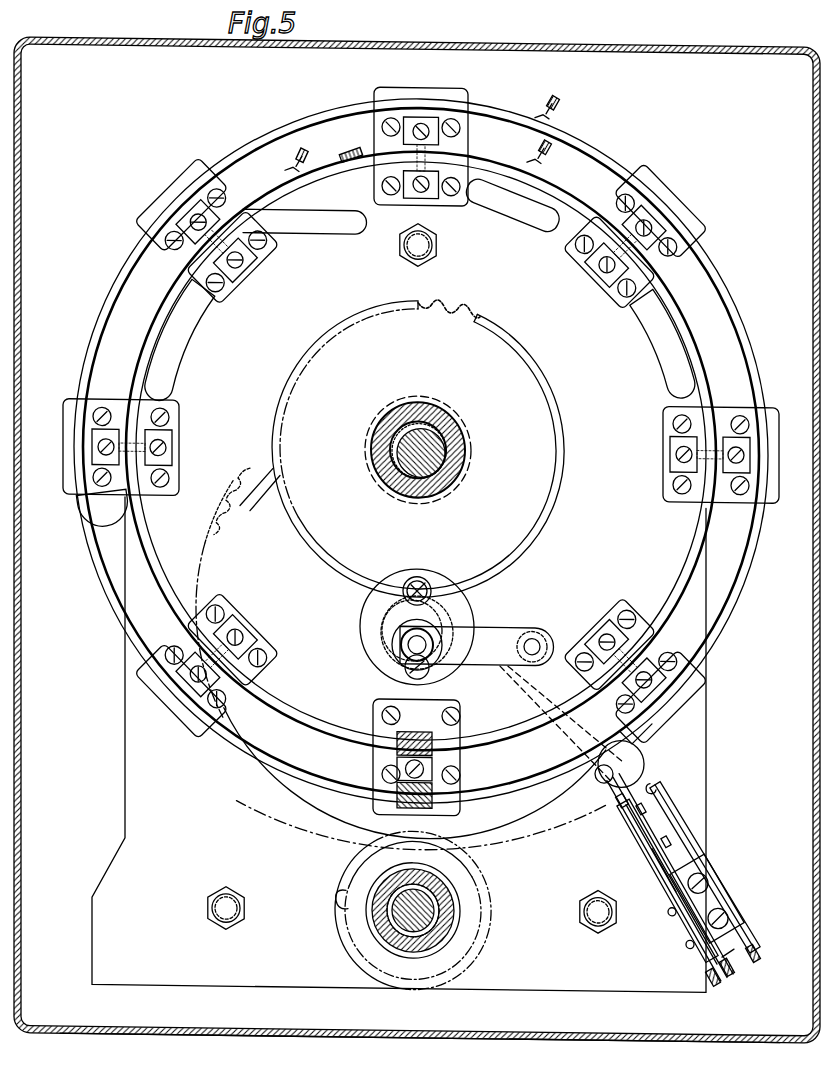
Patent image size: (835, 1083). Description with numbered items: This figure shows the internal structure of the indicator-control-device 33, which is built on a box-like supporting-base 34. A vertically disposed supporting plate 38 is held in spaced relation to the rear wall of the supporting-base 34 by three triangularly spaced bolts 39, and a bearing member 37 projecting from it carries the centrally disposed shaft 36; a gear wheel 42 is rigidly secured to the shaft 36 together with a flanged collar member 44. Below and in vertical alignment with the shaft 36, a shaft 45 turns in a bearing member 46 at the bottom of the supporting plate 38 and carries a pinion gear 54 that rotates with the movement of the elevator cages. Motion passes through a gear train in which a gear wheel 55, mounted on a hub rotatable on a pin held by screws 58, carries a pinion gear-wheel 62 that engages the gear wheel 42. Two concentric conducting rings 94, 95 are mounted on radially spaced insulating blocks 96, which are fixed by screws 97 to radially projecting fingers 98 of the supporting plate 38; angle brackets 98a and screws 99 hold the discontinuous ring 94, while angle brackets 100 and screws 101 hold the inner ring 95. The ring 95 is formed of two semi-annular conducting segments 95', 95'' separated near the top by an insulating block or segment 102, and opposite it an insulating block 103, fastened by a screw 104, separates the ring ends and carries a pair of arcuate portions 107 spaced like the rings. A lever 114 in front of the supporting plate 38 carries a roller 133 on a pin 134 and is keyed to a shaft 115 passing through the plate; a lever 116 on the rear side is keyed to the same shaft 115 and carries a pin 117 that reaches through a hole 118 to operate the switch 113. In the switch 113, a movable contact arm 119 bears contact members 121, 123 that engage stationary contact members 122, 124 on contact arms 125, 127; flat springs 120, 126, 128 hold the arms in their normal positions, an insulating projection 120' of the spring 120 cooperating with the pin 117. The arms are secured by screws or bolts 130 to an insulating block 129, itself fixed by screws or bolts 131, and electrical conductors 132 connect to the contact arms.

The indicator-control-device 33 is at (658, 42).
The supporting-base 34 is at (118, 1035).
The ring 94 is at (290, 115).
The ring 95 is at (421, 451).
The semi-annular conducting segment 95' is at (560, 143).
The semi-annular conducting segment 95'' is at (265, 172).
The insulating block or segment 102 is at (356, 155).
The radially projecting fingers 98 is at (220, 172).
The angle brackets 98a is at (165, 268).
The screws 101 is at (215, 303).
The angle brackets 100 is at (250, 263).
The insulating blocks 96 is at (238, 288).
The screws 97 is at (262, 241).
The screws 99 is at (244, 214).
The supporting plate 38 is at (648, 352).
The arcuate portions 107 is at (400, 730).
The screw 104 is at (432, 755).
The insulating block 103 is at (380, 756).
The bolts 39 is at (431, 253).
The gear wheel 42 is at (472, 311).
The flanged collar member 44 is at (428, 393).
The shaft 36 is at (386, 486).
The bearing member 37 is at (456, 420).
The gear wheel 55 is at (228, 522).
The pinion gear-wheel 62 is at (380, 610).
The roller 133 is at (446, 609).
The screws 58 is at (416, 578).
The pin 134 is at (430, 641).
The lever 114 is at (468, 627).
The shaft 115 is at (530, 634).
The lever 116 is at (530, 681).
The hole 118 is at (640, 733).
The flat spring 120 is at (644, 761).
The pin 117 is at (600, 773).
The stationary contact member 124 is at (646, 776).
The switch 113 is at (697, 786).
The insulating projection 120' is at (604, 808).
The stationary contact member 122 is at (625, 807).
The contact member 121 is at (635, 822).
The contact member 123 is at (659, 814).
The movable contact arm 119 is at (678, 847).
The flat spring 128 is at (690, 821).
The contact arm 127 is at (690, 836).
The contact arm 125 is at (660, 861).
The flat spring 126 is at (660, 881).
The screws or bolts 130 is at (670, 903).
The screws or bolts 131 is at (735, 885).
The electrical conductors 132 is at (755, 939).
The insulating block 129 is at (735, 949).
The pinion gear 54 is at (340, 895).
The shaft 45 is at (455, 881).
The bearing member 46 is at (440, 908).